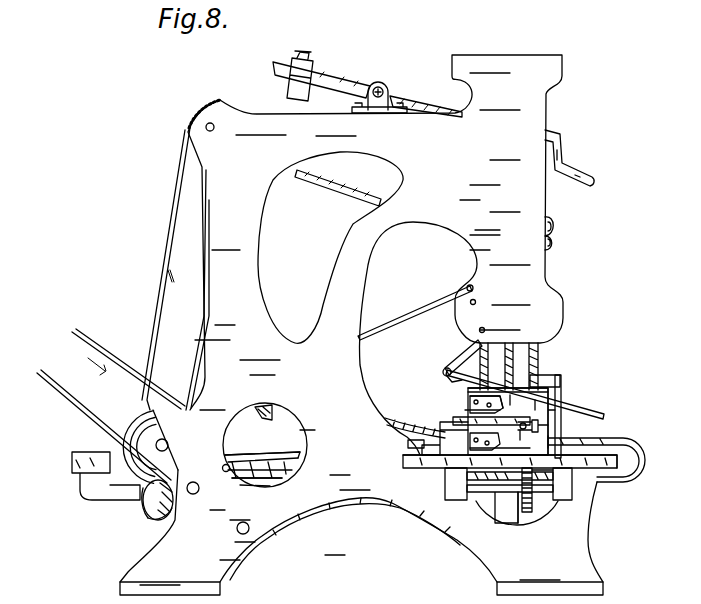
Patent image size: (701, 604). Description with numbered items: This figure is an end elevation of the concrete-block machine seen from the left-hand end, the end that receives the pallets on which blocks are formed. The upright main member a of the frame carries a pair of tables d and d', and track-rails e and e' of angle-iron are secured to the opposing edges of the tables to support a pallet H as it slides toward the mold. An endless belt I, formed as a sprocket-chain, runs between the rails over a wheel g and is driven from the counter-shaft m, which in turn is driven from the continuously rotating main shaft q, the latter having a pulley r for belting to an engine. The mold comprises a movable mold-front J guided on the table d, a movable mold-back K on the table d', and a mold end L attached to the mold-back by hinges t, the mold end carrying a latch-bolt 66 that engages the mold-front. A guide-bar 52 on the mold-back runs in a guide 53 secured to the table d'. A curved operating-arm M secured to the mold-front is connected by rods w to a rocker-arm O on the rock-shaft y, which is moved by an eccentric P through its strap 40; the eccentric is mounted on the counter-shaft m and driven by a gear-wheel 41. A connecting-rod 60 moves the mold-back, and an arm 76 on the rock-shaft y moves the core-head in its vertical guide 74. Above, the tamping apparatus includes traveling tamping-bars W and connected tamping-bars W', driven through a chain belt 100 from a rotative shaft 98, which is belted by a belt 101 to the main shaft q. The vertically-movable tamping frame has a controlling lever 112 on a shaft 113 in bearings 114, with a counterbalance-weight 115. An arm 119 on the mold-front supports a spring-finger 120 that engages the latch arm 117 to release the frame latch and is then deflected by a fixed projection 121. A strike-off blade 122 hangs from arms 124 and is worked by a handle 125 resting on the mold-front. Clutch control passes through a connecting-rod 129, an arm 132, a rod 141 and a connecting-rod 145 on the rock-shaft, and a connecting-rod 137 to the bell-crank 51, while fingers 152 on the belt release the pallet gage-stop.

The upright main member a is at (361, 325).
The rotative shaft 98 is at (214, 131).
The belt 101 is at (176, 207).
The chain belt 100 is at (324, 183).
The shaft 113 is at (380, 85).
The bearings 114 is at (386, 90).
The counterbalance-weight 115 is at (287, 88).
The controlling handle or lever 112 is at (577, 173).
The connecting-rod 129 is at (418, 305).
The traveling tamping-bars W is at (486, 345).
The tamping-bars W' is at (519, 351).
The arm 117 is at (540, 346).
The fixed projection 121 is at (540, 359).
The spring-finger 120 is at (540, 378).
The arm 119 is at (562, 396).
The mold end L is at (570, 417).
The arm 124 is at (460, 354).
The strike-off blade 122 is at (443, 373).
The handle 125 is at (598, 411).
The latch-bolt 66 is at (506, 422).
The mold-back K is at (462, 390).
The hinges t is at (465, 403).
The mold-front J is at (550, 430).
The connecting-rod 60 is at (400, 418).
The guide-bar 52 is at (443, 427).
The guide 53 is at (402, 444).
The table d' is at (490, 457).
The table d is at (607, 453).
The curved operating-arm M is at (645, 463).
The track-rail e' is at (427, 484).
The track-rail e is at (583, 490).
The pallet H is at (500, 495).
The endless belt I is at (518, 507).
The wheel g is at (532, 497).
The vertical guide 74 is at (524, 513).
The fingers 152 is at (533, 507).
The arm 76 is at (328, 522).
The rods w is at (262, 466).
The arm 132 is at (262, 418).
The rod 141 is at (280, 468).
The connecting-rod 145 is at (250, 487).
The pulley r is at (130, 430).
The connecting-rod 137 is at (90, 450).
The bell-crank 51 is at (72, 463).
The main shaft q is at (166, 450).
The strap 40 is at (143, 505).
The gear-wheel 41 is at (160, 512).
The eccentric P is at (158, 513).
The rocker-arm O is at (218, 497).
The counter-shaft m is at (193, 494).
The rock-shaft y is at (247, 533).